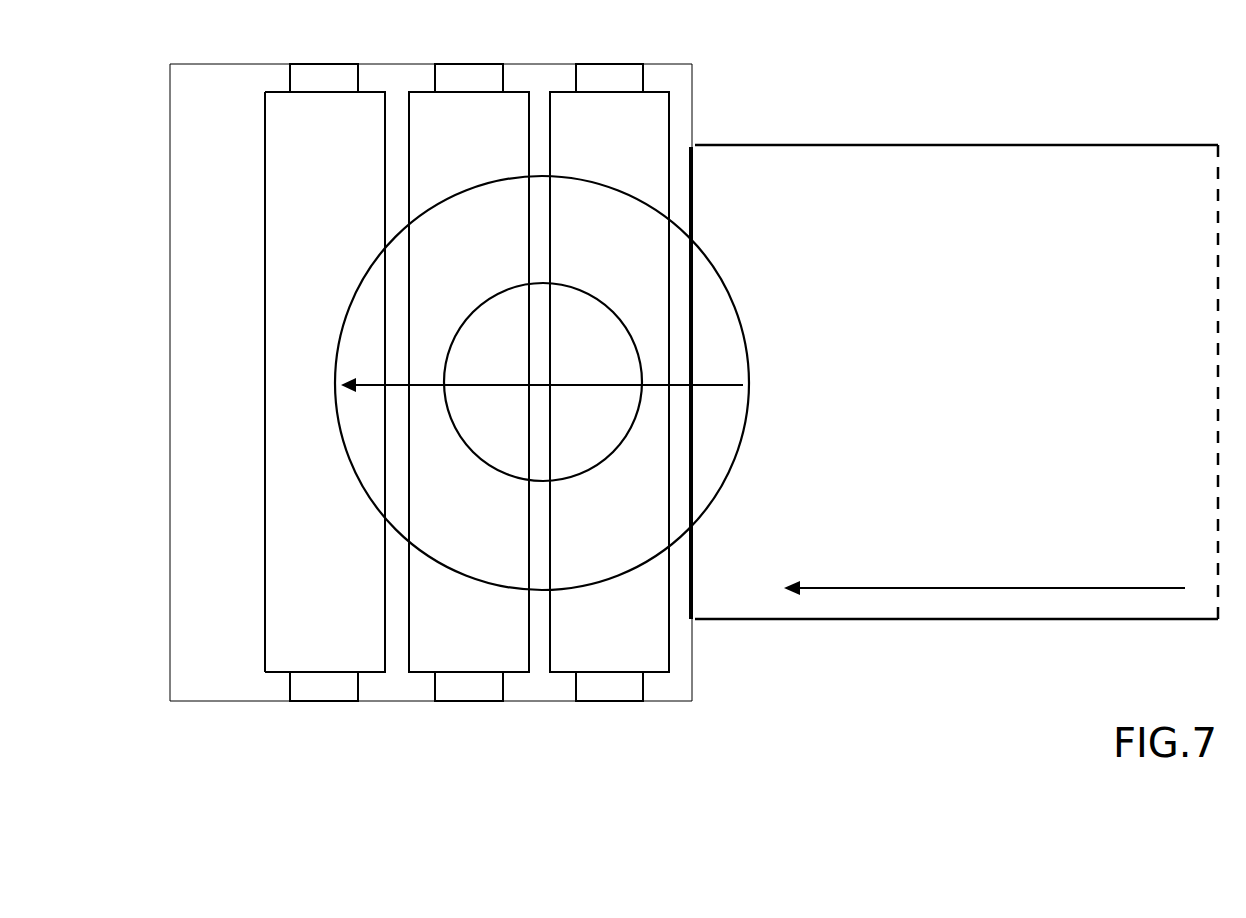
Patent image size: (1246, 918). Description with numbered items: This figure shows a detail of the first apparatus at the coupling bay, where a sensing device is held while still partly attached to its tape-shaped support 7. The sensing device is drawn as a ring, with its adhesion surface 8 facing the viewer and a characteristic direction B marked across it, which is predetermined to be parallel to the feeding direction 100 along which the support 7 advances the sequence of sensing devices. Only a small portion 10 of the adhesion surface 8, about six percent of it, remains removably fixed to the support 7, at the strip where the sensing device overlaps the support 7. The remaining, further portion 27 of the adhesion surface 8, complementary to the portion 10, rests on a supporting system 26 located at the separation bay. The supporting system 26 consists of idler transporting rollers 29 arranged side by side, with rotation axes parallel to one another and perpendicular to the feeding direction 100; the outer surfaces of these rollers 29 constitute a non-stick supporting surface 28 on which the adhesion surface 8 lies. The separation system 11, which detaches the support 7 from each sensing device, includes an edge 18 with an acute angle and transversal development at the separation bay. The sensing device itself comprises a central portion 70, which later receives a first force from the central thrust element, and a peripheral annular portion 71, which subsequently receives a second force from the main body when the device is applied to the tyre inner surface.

The support 7 is at (980, 160).
The adhesion surface 8 is at (370, 259).
The portion of the adhesion surface 10 is at (738, 350).
The separation system 11 is at (724, 96).
The edge 18 is at (700, 676).
The supporting system 26 is at (212, 641).
The further portion of adhesion surface 27 is at (525, 265).
The non-stick supporting surface 28 is at (260, 568).
The idler transporting rollers 29 is at (285, 138).
The central portion 70 is at (523, 452).
The peripheral annular portion 71 is at (380, 333).
The feeding direction 100 is at (984, 572).